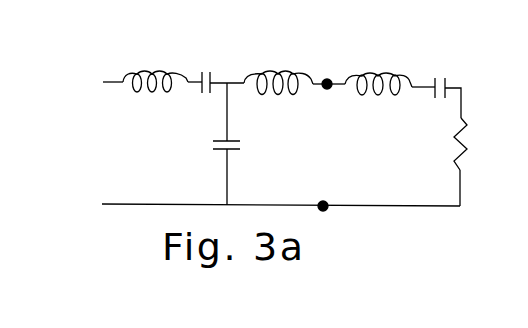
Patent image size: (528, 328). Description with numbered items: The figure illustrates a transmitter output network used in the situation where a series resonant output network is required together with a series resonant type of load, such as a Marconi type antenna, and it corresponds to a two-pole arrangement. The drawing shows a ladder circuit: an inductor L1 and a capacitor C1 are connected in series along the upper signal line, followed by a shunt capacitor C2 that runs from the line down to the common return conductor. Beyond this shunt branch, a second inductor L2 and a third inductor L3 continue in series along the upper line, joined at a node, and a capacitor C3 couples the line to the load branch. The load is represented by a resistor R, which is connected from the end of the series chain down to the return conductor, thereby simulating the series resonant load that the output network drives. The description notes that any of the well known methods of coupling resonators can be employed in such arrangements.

The first inductor L1 is at (155, 73).
The first capacitor C1 is at (205, 74).
The second (shunt) capacitor C2 is at (239, 144).
The second inductor L2 is at (278, 75).
The third inductor L3 is at (378, 75).
The third capacitor C3 is at (440, 77).
The load resistor R is at (466, 144).